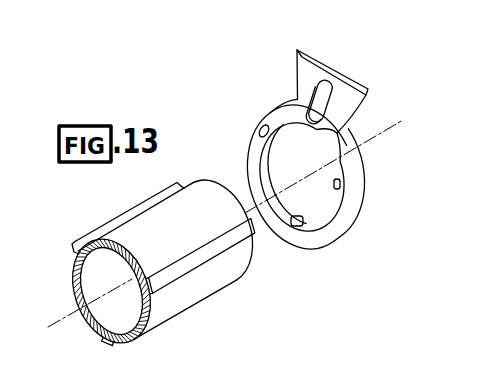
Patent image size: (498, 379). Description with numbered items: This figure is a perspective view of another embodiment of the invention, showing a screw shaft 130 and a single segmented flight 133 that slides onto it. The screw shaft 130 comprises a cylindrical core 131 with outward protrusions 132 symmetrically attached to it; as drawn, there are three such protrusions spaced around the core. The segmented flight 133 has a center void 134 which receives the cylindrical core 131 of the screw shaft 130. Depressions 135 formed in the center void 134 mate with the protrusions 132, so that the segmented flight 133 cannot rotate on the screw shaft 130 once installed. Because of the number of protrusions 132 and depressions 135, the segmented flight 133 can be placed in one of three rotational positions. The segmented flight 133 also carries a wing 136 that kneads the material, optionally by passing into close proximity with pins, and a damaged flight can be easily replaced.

The screw shaft 130 is at (144, 253).
The cylindrical core 131 is at (227, 190).
The outward protrusions 132 is at (229, 302).
The segmented flight 133 is at (307, 165).
The center void 134 is at (323, 189).
The depressions 135 is at (261, 127).
The wing 136 is at (344, 81).